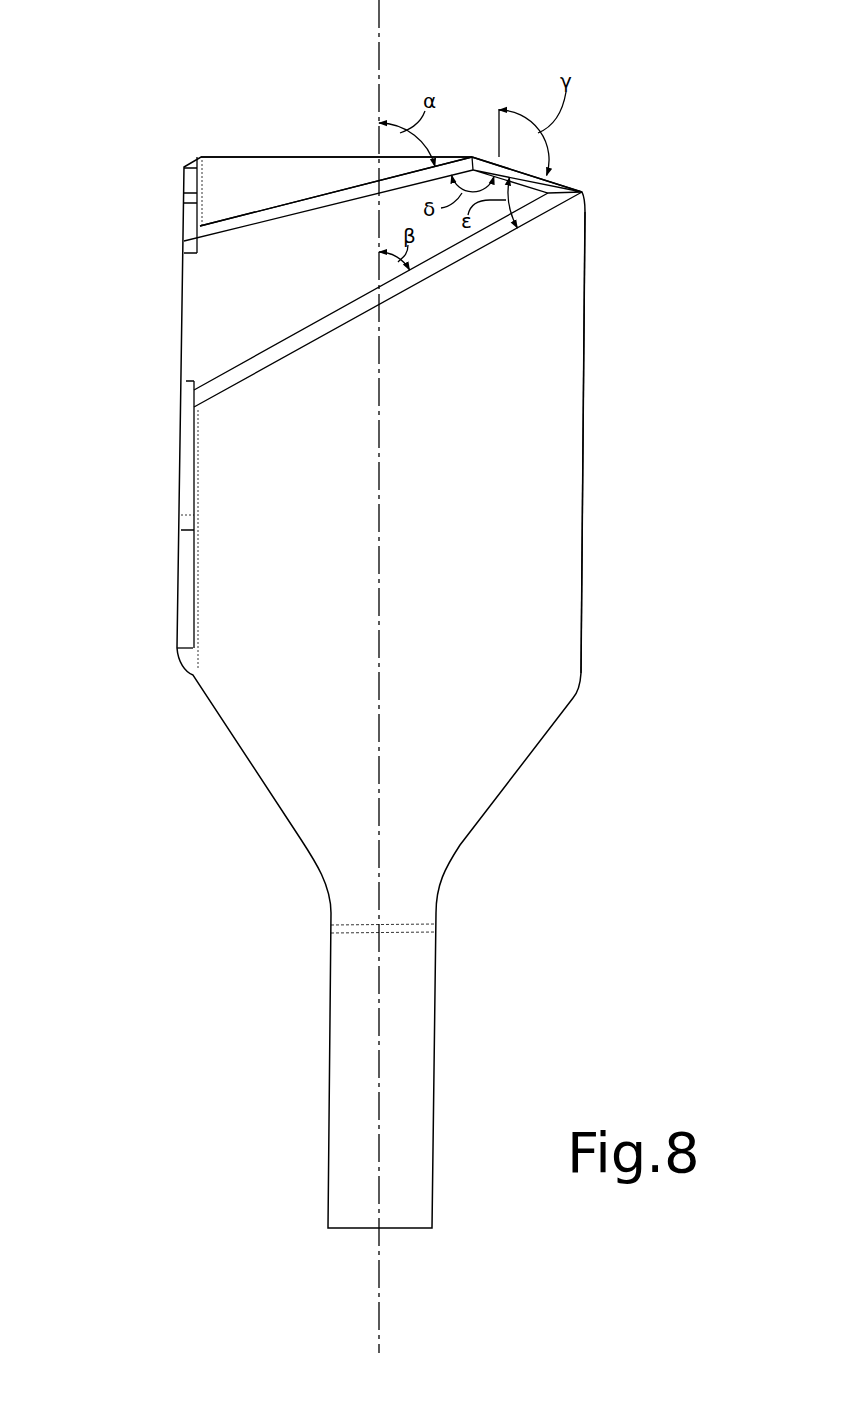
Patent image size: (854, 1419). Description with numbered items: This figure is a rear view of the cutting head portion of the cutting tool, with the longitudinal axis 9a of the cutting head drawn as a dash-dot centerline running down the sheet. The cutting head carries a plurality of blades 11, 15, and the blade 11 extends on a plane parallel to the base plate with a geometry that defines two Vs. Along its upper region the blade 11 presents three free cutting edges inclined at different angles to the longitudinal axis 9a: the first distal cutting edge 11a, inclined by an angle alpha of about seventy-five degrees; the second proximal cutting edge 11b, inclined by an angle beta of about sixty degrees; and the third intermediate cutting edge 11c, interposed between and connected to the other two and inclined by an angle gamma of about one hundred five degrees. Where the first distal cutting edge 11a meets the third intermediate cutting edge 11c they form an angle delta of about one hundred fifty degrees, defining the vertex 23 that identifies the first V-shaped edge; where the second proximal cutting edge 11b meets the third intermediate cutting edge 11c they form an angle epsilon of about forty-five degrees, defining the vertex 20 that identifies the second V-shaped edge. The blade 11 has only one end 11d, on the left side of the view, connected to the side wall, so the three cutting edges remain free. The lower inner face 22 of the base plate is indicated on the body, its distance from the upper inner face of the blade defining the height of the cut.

The longitudinal axis 9a is at (379, 52).
The blade 11 is at (240, 312).
The first distal cutting edge 11a is at (251, 223).
The second proximal cutting edge 11b is at (413, 282).
The third intermediate cutting edge 11c is at (581, 189).
The end 11d is at (184, 283).
The blade 15 is at (270, 157).
The vertex 20 is at (584, 192).
The lower inner face 22 is at (542, 470).
The vertex 23 is at (469, 157).